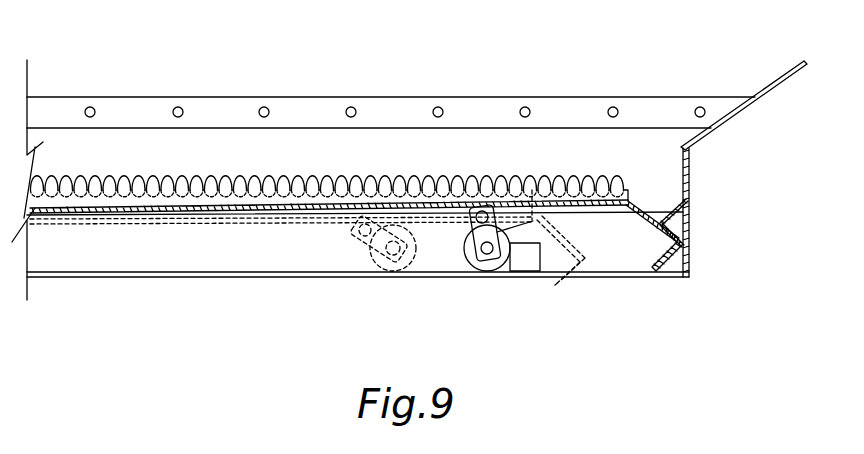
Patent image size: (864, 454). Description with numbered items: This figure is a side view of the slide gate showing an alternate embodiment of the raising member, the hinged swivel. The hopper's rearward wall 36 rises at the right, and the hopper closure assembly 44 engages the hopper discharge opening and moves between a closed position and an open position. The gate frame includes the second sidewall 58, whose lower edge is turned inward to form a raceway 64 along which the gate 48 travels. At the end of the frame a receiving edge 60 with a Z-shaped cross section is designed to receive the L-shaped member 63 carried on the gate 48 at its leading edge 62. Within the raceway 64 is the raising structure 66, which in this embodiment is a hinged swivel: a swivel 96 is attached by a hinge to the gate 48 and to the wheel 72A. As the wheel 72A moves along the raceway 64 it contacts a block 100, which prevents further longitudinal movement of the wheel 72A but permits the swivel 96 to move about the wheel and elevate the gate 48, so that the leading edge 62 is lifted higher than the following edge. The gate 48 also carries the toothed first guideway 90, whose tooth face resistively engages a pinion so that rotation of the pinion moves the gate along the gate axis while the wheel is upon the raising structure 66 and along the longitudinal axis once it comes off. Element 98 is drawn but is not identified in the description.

The rearward wall 36 is at (780, 78).
The hopper closure assembly 44 is at (391, 79).
The gate 48 is at (437, 205).
The second sidewall 58 is at (218, 110).
The receiving edge 60 is at (678, 241).
The leading edge 62 is at (629, 201).
The L-shaped member 63 is at (647, 226).
The raceway 64 is at (88, 247).
The raising structure 66 is at (292, 258).
The wheel 72A is at (390, 268).
The first guideway 90 is at (435, 273).
The swivel 96 is at (352, 244).
The link plate 98 is at (352, 228).
The block 100 is at (525, 268).